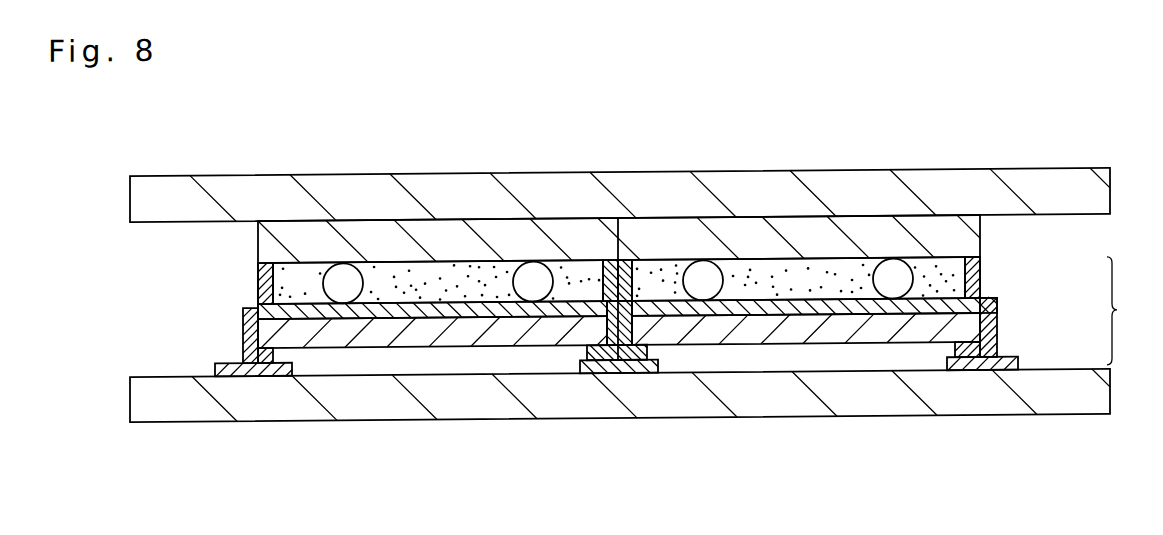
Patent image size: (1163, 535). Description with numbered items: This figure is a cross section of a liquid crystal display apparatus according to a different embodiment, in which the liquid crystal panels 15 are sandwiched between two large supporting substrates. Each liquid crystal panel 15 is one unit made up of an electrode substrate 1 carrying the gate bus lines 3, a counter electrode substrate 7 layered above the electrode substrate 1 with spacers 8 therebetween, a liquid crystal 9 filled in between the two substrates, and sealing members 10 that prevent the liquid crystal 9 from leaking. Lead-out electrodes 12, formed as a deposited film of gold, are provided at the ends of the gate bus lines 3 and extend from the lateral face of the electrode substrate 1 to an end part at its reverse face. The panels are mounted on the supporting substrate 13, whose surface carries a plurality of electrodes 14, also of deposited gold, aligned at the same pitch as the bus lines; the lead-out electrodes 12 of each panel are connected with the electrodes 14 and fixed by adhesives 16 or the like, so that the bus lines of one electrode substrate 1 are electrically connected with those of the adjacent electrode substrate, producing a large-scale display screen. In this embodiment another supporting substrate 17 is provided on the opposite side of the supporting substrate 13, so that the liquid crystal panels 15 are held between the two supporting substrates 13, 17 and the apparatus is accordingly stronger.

The electrode substrate 1 is at (368, 346).
The gate bus line 3 is at (313, 348).
The counter electrode substrate 7 is at (516, 220).
The spacers 8 is at (362, 262).
The liquid crystal 9 is at (422, 262).
The sealing members 10 is at (608, 262).
The lead-out electrode 12 is at (243, 317).
The supporting substrate 13 is at (1018, 418).
The electrodes 14 is at (215, 363).
The liquid crystal panel 15 is at (1158, 329).
The adhesives 16 is at (457, 361).
The supporting substrate 17 is at (1008, 172).